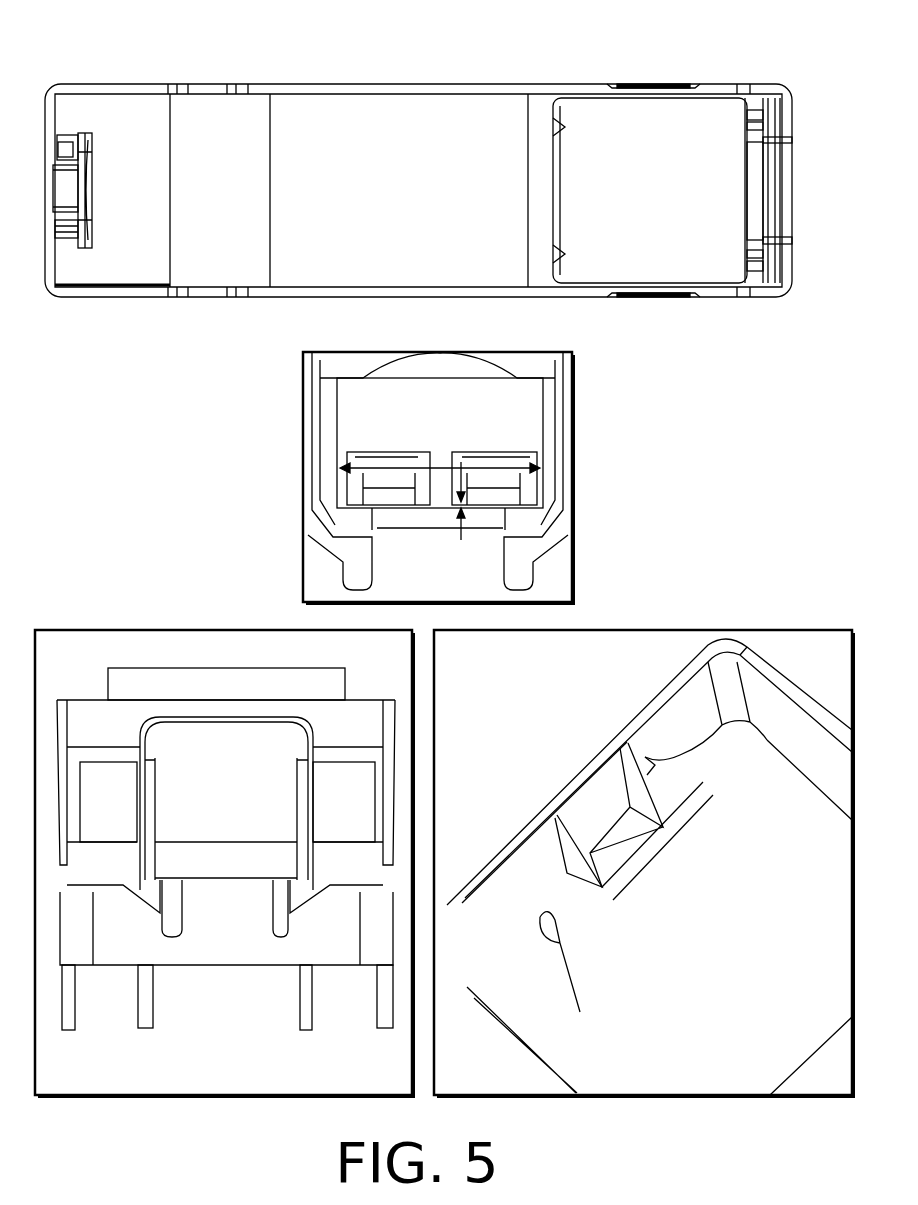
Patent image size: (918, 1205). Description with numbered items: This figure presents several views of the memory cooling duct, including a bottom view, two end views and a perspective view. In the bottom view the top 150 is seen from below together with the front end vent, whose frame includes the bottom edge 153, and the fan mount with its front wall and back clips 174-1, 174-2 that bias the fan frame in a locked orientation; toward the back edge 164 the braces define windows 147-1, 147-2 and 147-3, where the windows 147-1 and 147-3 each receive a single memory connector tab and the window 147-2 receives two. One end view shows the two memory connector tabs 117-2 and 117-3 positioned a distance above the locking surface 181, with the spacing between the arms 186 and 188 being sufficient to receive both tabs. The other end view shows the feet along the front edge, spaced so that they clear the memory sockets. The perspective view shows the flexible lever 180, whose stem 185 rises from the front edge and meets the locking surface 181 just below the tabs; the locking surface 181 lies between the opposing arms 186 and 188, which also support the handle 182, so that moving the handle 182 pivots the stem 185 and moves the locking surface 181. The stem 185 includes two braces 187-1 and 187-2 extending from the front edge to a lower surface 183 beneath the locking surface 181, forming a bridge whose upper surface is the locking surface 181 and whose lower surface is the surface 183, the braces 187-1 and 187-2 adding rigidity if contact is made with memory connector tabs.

The top 150 is at (226, 832).
The bottom edge 153 is at (112, 892).
The back edge 164 is at (790, 190).
The lever 180 is at (92, 196).
The locking surface 181 is at (445, 510).
The handle 182 is at (450, 847).
The lower surface 183 is at (651, 841).
The stem 185 is at (410, 637).
The arm 186 is at (538, 392).
The arm 188 is at (350, 392).
The brace 187-1 is at (558, 817).
The brace 187-2 is at (628, 757).
The window 147-1 is at (773, 112).
The window 147-2 is at (773, 183).
The window 147-3 is at (773, 268).
The back clip 174-1 is at (750, 125).
The back clip 174-2 is at (753, 252).
The memory connector tab 117-2 is at (510, 452).
The memory connector tab 117-3 is at (410, 452).